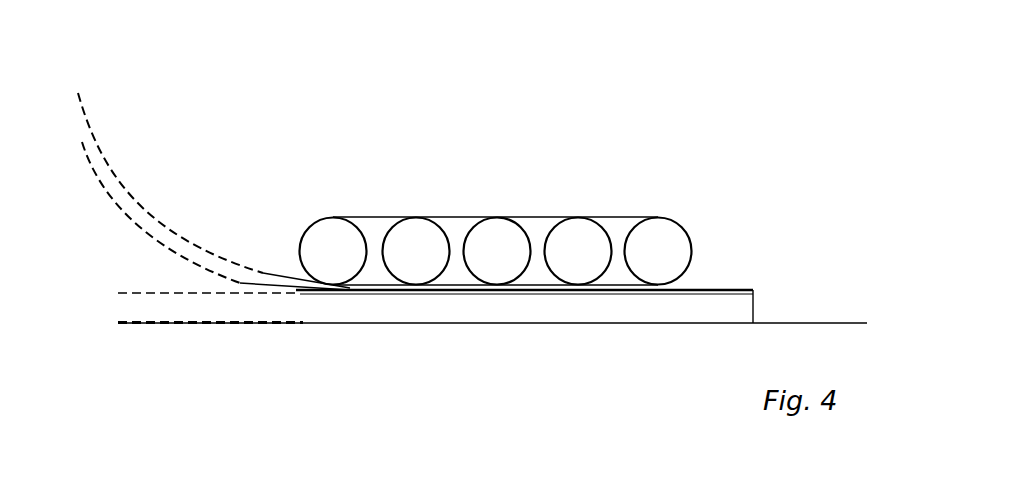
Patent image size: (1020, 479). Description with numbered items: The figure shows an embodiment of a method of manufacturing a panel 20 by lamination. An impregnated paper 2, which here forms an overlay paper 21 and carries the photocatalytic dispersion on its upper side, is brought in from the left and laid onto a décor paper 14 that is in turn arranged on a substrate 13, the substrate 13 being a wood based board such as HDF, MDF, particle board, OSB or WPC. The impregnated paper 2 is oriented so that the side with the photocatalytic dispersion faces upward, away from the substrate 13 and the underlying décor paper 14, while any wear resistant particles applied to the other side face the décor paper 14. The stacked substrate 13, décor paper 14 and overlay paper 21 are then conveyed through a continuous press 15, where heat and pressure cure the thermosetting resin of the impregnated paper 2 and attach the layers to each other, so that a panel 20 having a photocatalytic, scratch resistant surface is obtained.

The impregnated paper 2 is at (300, 287).
The substrate 13 is at (737, 309).
The décor paper 14 is at (282, 287).
The continuous press 15 is at (545, 192).
The panel 20 is at (724, 276).
The overlay paper 21 is at (753, 288).